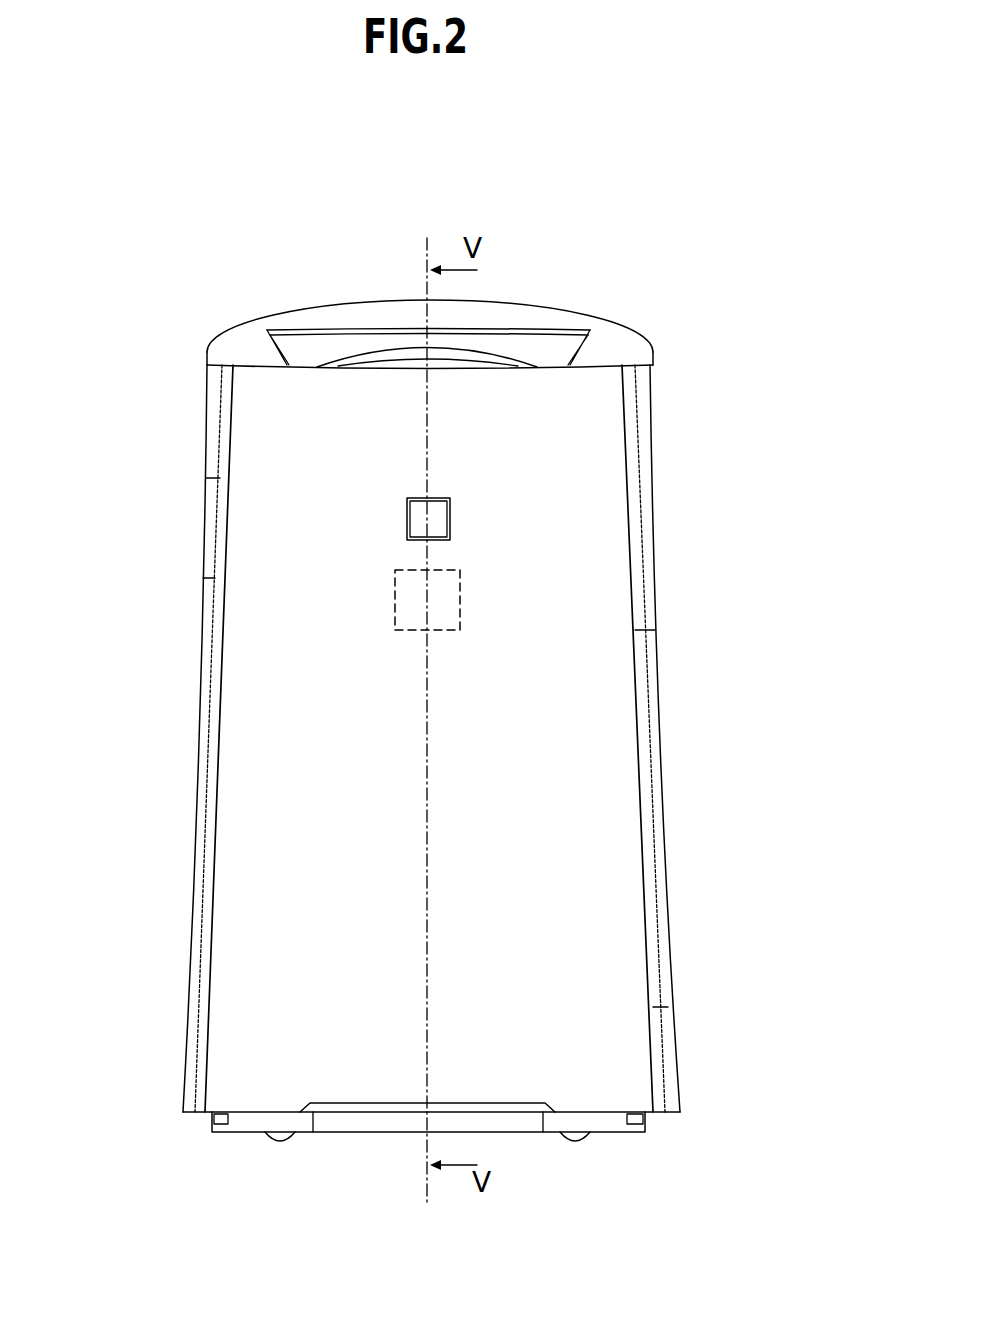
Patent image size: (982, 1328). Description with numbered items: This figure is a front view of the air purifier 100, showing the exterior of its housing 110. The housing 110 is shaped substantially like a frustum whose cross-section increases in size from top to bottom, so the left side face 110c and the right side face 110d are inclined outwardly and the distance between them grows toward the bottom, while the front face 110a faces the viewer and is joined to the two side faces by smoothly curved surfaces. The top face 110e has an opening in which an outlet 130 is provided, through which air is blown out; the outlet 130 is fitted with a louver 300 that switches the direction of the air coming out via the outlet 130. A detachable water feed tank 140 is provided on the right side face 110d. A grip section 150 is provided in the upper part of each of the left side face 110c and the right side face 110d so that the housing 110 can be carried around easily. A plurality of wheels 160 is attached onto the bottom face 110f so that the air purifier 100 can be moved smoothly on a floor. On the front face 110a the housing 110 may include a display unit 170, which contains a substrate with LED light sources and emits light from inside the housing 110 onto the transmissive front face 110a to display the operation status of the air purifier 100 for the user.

The air purifier 100 is at (684, 226).
The housing 110 is at (668, 343).
The front face 110a is at (623, 730).
The left side face 110c is at (202, 595).
The right side face 110d is at (653, 585).
The top face 110e is at (575, 308).
The bottom face 110f is at (410, 1132).
The outlet 130 is at (285, 306).
The water feed tank 140 is at (663, 845).
The grip section 150 is at (212, 432).
The wheels 160 is at (282, 1143).
The display unit 170 is at (400, 598).
The louver 300 is at (262, 345).